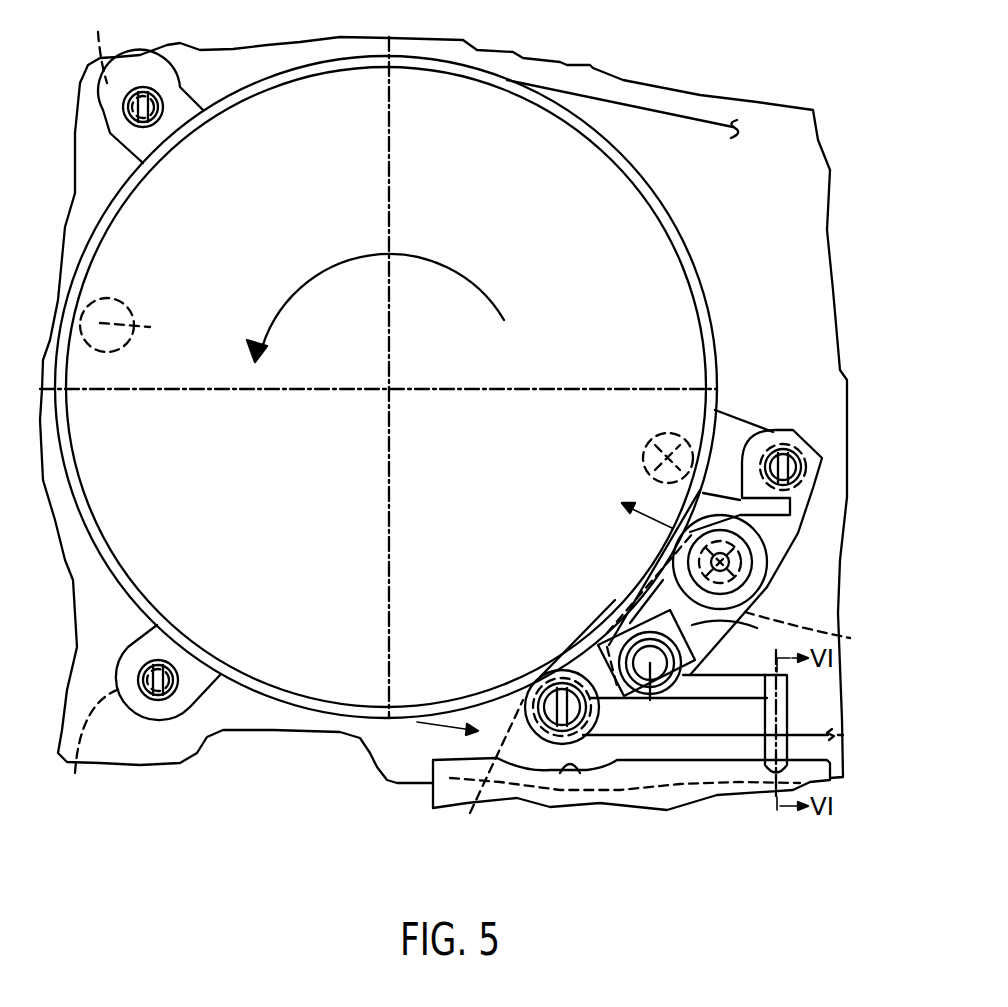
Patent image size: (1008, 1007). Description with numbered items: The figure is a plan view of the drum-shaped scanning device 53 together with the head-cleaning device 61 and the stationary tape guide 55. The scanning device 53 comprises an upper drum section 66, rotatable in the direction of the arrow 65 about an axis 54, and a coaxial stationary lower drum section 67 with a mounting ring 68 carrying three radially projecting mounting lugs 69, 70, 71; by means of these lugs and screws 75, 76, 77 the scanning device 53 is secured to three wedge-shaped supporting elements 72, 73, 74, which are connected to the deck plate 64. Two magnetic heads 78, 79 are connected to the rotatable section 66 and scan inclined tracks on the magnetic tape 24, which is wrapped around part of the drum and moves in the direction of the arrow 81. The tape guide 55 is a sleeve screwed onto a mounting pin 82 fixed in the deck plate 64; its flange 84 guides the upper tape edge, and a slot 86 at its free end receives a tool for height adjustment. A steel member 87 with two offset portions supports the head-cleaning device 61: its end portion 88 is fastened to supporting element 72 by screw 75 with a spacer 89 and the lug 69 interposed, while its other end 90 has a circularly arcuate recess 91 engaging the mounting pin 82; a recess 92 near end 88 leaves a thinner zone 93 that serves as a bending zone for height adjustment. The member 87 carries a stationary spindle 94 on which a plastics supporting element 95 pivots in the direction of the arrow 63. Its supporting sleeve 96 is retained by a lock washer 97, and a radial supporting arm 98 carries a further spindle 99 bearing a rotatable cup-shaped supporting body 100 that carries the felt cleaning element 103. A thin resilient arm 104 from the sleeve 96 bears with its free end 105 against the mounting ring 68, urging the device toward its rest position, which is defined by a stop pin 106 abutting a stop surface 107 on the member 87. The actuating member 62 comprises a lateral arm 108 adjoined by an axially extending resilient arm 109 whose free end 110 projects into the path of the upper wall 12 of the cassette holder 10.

The cassette holder 10 is at (418, 772).
The upper wall 12 is at (566, 766).
The magnetic tape 24 is at (697, 117).
The drum-shaped scanning device 53 is at (698, 272).
The axis of rotation 54 is at (391, 386).
The stationary tape guide 55 is at (506, 714).
The head-cleaning device 61 is at (647, 551).
The actuating member 62 is at (793, 701).
The arrow 63 is at (637, 523).
The deck plate 64 is at (831, 292).
The arrow 65 is at (386, 252).
The upper drum section 66 is at (598, 148).
The lower drum section 67 is at (632, 165).
The mounting ring 68 is at (669, 222).
The mounting lug 69 is at (751, 430).
The mounting lug 70 is at (182, 85).
The mounting lug 71 is at (146, 702).
The wedge-shaped supporting element 72 is at (719, 414).
The wedge-shaped supporting element 73 is at (95, 44).
The wedge-shaped supporting element 74 is at (91, 746).
The screw 75 is at (824, 456).
The screw 76 is at (131, 90).
The screw 77 is at (174, 692).
The magnetic head 78 is at (690, 462).
The magnetic head 79 is at (138, 338).
The arrow 81 is at (435, 727).
The mounting pin 82 is at (490, 772).
The flange 84 is at (510, 692).
The slot 86 is at (560, 745).
The steel member 87 is at (828, 482).
The end portion 88 is at (800, 436).
The spacer 89 is at (781, 424).
The other end 90 is at (582, 668).
The circularly arcuate recess 91 is at (538, 682).
The recess 92 is at (723, 475).
The thinner zone 93 is at (803, 508).
The stationary steel spindle 94 is at (620, 730).
The plastics supporting element 95 is at (602, 638).
The supporting sleeve 96 is at (683, 745).
The lock washer 97 is at (665, 725).
The supporting arm 98 is at (735, 633).
The further stationary spindle 99 is at (742, 540).
The cup-shaped supporting body 100 is at (767, 565).
The cleaning element 103 is at (772, 594).
The resilient arm 104 is at (612, 626).
The free end 105 is at (652, 582).
The stop pin 106 is at (689, 513).
The stop surface 107 is at (850, 638).
The arm 108 is at (712, 684).
The arm 109 is at (773, 723).
The free end 110 is at (776, 755).